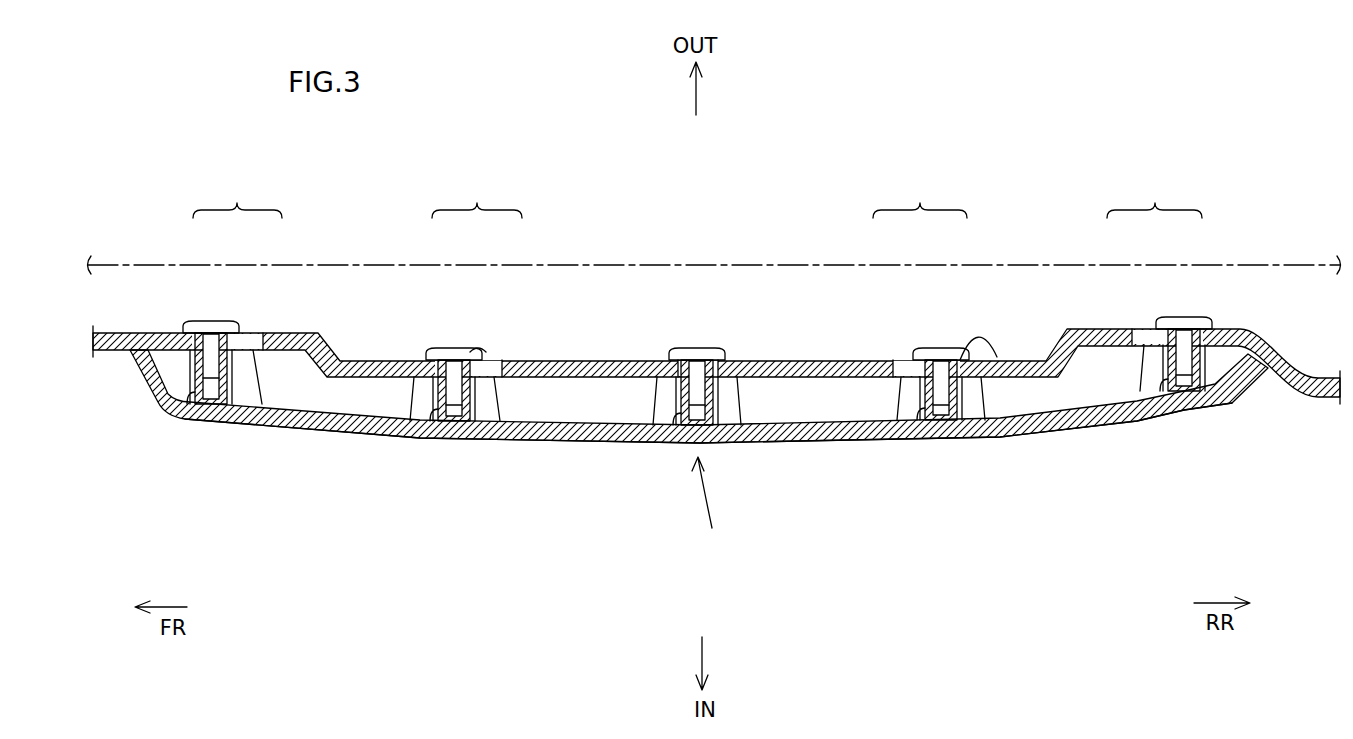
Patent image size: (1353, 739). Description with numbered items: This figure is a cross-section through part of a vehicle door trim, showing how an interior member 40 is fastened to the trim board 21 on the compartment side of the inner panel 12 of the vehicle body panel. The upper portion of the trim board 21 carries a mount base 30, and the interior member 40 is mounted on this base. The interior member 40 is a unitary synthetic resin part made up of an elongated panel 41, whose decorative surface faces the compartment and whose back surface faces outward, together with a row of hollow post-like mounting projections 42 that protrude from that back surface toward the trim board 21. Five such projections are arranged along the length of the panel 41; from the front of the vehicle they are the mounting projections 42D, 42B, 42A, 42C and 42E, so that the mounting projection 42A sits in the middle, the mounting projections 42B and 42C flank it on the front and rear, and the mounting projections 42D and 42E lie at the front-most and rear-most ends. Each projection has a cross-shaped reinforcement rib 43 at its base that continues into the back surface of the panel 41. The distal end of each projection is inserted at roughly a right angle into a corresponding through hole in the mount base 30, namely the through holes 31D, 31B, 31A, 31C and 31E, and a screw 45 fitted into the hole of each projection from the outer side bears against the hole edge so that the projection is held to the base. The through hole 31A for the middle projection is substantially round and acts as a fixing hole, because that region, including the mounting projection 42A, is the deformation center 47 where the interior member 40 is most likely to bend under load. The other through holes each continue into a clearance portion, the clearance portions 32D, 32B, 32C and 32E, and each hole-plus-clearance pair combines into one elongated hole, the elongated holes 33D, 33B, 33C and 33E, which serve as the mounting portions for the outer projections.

The inner panel 12 is at (617, 262).
The trim board 21 is at (793, 363).
The mount base 30 is at (716, 311).
The through hole 31A is at (697, 348).
The through hole 31B is at (455, 348).
The through hole 31C is at (941, 348).
The through hole 31D is at (215, 322).
The through hole 31E is at (1181, 317).
The clearance portion 32B is at (490, 360).
The clearance portion 32C is at (905, 360).
The clearance portion 32D is at (252, 350).
The clearance portion 32E is at (1143, 345).
The elongated hole 33B is at (474, 299).
The elongated hole 33C is at (920, 299).
The elongated hole 33D is at (233, 291).
The elongated hole 33E is at (1159, 284).
The interior member 40 is at (699, 428).
The panel 41 is at (590, 443).
The mounting projection 42 is at (659, 439).
The mounting projection 42A is at (663, 443).
The mounting projection 42B is at (416, 430).
The mounting projection 42C is at (905, 420).
The mounting projection 42D is at (180, 400).
The mounting projection 42E is at (1148, 405).
The reinforcement rib 43 is at (243, 392).
The screw 45 is at (470, 352).
The deformation center 47 is at (710, 507).